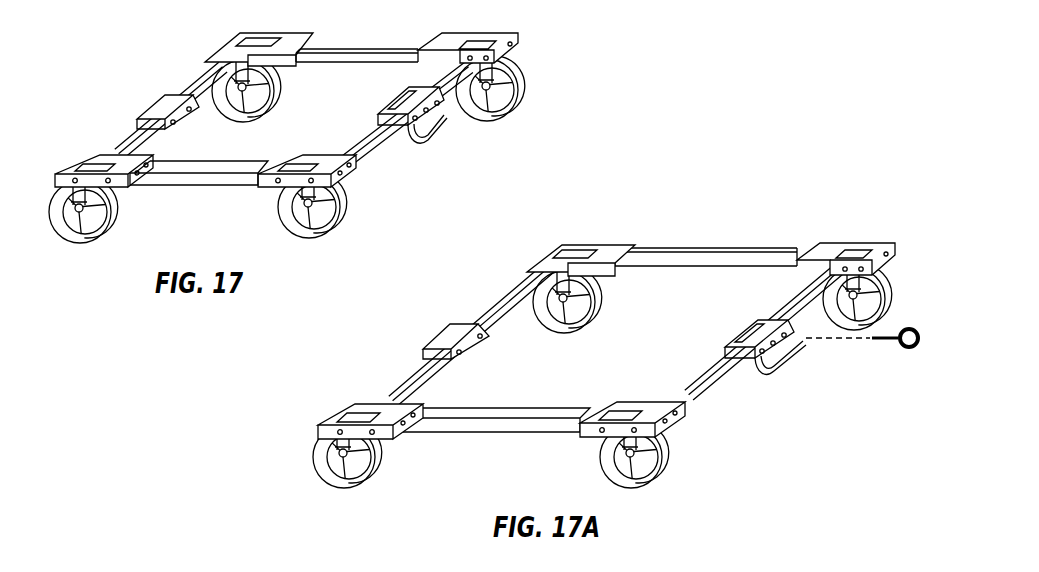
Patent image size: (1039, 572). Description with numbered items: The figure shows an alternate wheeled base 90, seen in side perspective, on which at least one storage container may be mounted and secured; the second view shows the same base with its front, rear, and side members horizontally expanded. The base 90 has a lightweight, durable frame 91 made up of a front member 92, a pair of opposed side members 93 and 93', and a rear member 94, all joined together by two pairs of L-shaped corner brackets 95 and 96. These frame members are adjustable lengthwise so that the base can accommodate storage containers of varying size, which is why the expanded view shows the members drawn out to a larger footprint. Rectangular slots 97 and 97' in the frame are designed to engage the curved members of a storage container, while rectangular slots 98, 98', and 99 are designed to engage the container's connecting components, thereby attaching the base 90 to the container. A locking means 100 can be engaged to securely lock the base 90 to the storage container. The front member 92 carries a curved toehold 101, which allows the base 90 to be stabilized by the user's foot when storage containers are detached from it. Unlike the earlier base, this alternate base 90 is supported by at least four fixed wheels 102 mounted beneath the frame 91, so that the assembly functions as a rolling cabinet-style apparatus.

In FIG. 17, the alternate wheeled base 90 is at (147, 95).
In FIG. 17A, the alternate wheeled base 90 is at (438, 324).
In FIG. 17, the frame 91 is at (377, 66).
In FIG. 17, the front member 92 is at (378, 119).
In FIG. 17, the side member 93 is at (199, 156).
In FIG. 17, the side member 93' is at (357, 31).
In FIG. 17, the rear member 94 is at (123, 130).
In FIG. 17, the L-shaped corner bracket 95 is at (452, 34).
In FIG. 17, the L-shaped corner bracket 96 is at (247, 36).
In FIG. 17A, the rectangular slot 97 is at (360, 432).
In FIG. 17A, the rectangular slot 97' is at (566, 274).
In FIG. 17A, the rectangular slot 98 is at (628, 405).
In FIG. 17A, the rectangular slot 98' is at (836, 269).
In FIG. 17A, the rectangular slot 99 is at (755, 330).
In FIG. 17A, the locking means 100 is at (902, 354).
In FIG. 17A, the curved toehold 101 is at (770, 362).
In FIG. 17A, the fixed wheel 102 is at (660, 472).